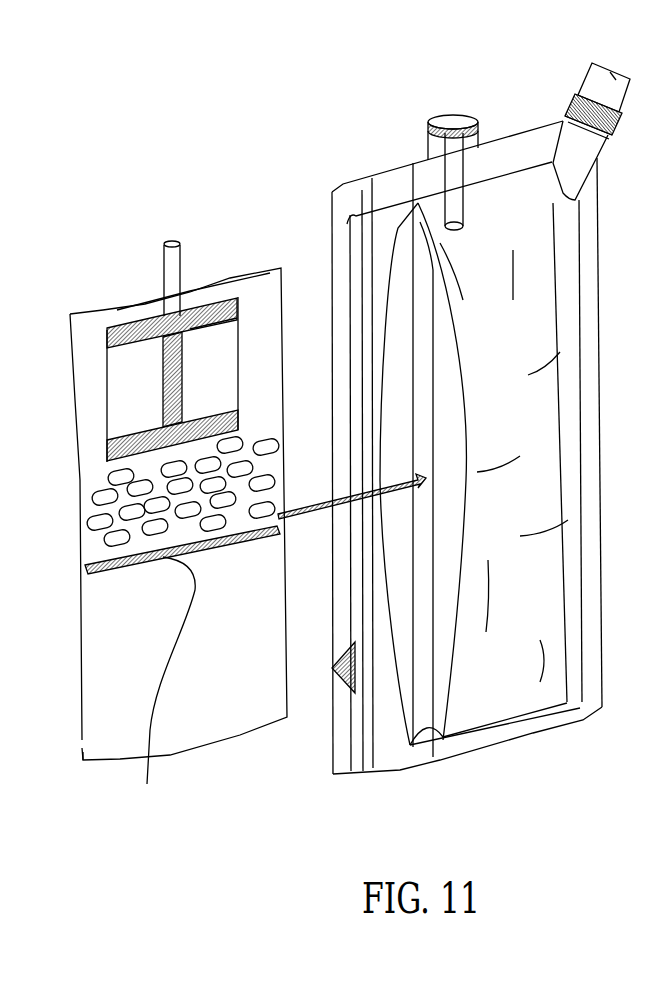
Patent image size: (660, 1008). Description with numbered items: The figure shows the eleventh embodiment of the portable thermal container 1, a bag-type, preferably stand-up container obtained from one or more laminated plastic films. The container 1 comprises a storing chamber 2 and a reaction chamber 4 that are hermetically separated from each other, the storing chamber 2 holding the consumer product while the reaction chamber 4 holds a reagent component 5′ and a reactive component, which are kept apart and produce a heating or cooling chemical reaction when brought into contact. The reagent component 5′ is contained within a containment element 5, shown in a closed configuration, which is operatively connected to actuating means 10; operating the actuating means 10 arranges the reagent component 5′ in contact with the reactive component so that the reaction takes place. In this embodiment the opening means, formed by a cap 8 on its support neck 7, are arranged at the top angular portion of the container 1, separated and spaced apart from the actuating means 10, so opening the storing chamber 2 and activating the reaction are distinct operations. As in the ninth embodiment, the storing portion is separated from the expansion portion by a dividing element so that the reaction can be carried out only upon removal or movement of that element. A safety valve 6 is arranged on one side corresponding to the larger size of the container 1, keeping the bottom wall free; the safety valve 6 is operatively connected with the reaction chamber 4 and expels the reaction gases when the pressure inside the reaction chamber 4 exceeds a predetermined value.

The portable thermal container 1 is at (498, 95).
The storing chamber 2 is at (398, 278).
The reaction chamber 4 is at (76, 723).
The containment element 5 is at (240, 417).
The reagent component 5′ is at (217, 336).
The safety valve 6 is at (333, 668).
The support neck 7 is at (612, 147).
The cap 8 is at (618, 68).
The actuating means 10 is at (172, 240).